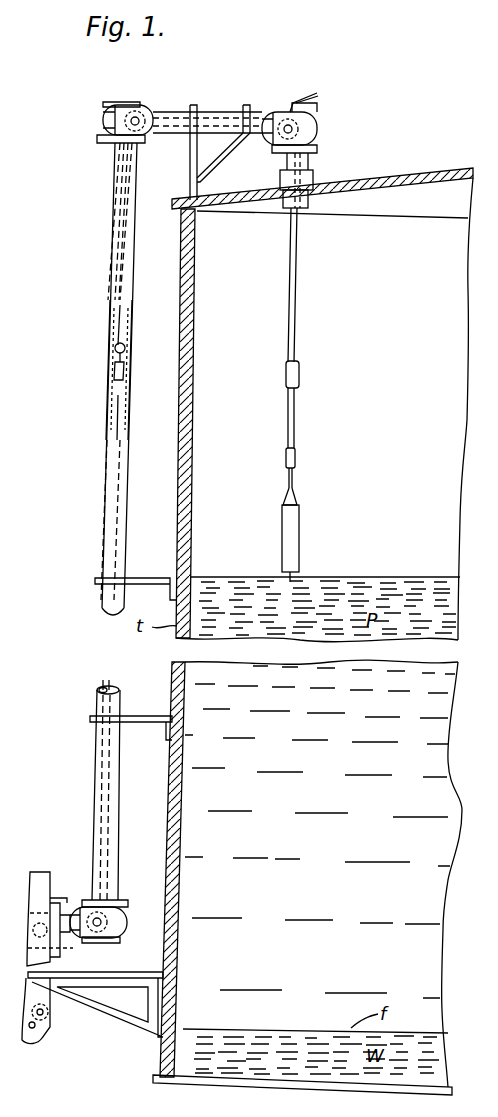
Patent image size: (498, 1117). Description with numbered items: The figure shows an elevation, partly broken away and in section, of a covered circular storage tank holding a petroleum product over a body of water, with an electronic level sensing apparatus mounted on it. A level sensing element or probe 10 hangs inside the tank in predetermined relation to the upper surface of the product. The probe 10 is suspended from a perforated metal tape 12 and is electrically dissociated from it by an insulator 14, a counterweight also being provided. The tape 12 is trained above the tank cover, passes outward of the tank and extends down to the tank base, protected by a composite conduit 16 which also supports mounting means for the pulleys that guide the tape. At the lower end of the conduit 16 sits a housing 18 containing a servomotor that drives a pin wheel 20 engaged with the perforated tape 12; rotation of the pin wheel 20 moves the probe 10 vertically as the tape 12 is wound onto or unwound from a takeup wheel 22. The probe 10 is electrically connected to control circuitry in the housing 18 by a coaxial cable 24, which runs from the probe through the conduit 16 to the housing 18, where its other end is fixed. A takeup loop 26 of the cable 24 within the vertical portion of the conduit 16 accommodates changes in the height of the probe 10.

The probe 10 is at (306, 535).
The perforated metal tape 12 is at (296, 328).
The insulator 14 is at (296, 460).
The composite conduit 16 is at (160, 108).
The housing 18 is at (45, 870).
The pin wheel 20 is at (99, 933).
The takeup wheel 22 is at (52, 1032).
The coaxial cable 24 is at (289, 306).
The takeup loop 26 is at (105, 338).